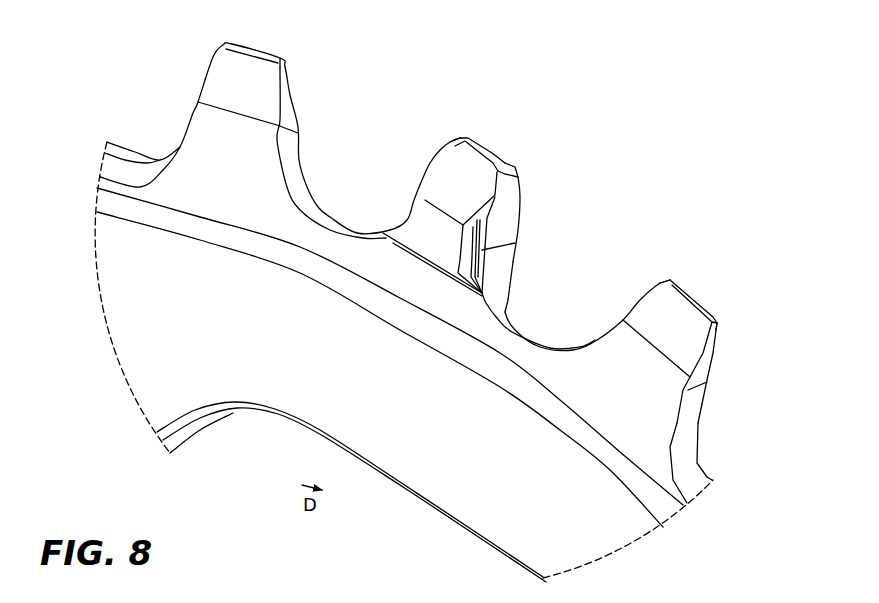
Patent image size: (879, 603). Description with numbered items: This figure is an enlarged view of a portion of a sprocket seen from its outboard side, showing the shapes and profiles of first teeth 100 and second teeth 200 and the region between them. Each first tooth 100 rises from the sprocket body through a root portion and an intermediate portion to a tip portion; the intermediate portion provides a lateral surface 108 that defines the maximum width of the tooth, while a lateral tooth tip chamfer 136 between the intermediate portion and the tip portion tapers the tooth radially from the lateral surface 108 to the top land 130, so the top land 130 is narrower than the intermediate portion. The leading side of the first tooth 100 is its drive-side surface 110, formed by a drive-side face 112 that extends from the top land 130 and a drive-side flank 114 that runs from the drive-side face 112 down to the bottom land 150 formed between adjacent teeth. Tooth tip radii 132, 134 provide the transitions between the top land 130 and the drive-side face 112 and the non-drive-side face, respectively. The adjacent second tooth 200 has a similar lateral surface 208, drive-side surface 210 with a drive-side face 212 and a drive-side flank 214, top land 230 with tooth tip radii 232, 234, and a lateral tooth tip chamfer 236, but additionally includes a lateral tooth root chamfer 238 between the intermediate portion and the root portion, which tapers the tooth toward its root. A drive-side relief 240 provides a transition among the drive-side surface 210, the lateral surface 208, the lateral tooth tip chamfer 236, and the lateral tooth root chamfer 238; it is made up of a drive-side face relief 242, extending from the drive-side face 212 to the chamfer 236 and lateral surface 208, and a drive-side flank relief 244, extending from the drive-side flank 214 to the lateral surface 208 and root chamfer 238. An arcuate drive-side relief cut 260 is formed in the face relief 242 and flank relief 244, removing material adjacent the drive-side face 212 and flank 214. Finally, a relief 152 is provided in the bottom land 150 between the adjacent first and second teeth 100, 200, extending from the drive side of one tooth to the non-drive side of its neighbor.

The first teeth 100 is at (744, 222).
The lateral surface 108 is at (632, 390).
The drive-side surface 110 is at (758, 390).
The drive-side face 112 is at (703, 358).
The drive-side flank 114 is at (688, 412).
The top land 130 is at (697, 297).
The tooth tip radius 132 is at (717, 320).
The tooth tip radius 134 is at (670, 280).
The lateral tooth tip chamfer 136 is at (670, 327).
The bottom land 150 is at (343, 227).
The relief 152 is at (330, 243).
The second teeth 200 is at (528, 82).
The lateral surface 208 is at (430, 238).
The drive-side surface 210 is at (548, 237).
The drive-side face 212 is at (508, 202).
The drive-side flank 214 is at (497, 268).
The top land 230 is at (485, 152).
The tooth tip radius 232 is at (510, 167).
The tooth tip radius 234 is at (462, 132).
The lateral tooth tip chamfer 236 is at (453, 183).
The lateral tooth root chamfer 238 is at (430, 263).
The drive-side relief 240 is at (463, 298).
The drive-side face relief 242 is at (475, 225).
The drive-side flank relief 244 is at (467, 263).
The drive-side relief cut 260 is at (480, 248).